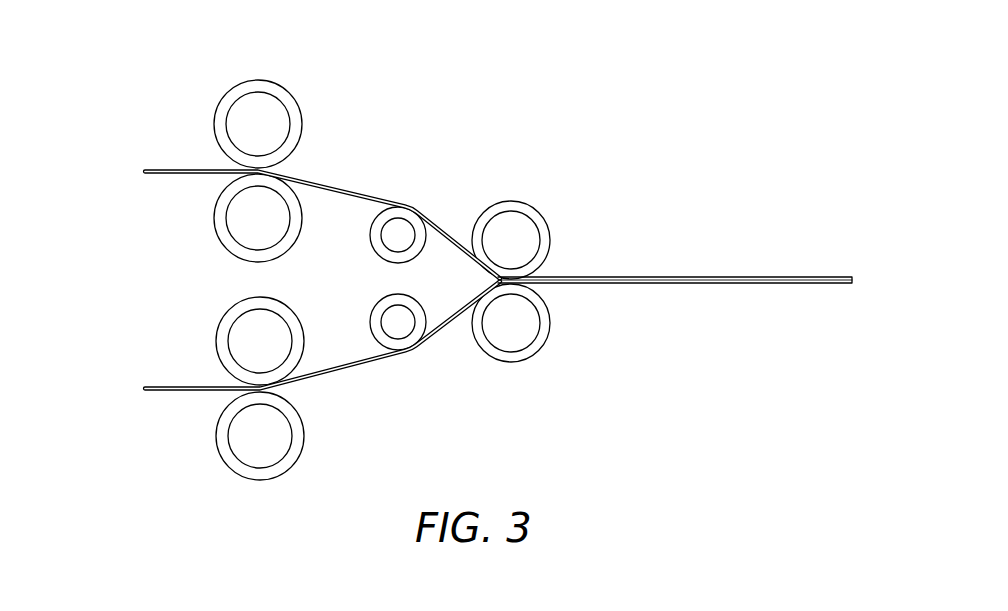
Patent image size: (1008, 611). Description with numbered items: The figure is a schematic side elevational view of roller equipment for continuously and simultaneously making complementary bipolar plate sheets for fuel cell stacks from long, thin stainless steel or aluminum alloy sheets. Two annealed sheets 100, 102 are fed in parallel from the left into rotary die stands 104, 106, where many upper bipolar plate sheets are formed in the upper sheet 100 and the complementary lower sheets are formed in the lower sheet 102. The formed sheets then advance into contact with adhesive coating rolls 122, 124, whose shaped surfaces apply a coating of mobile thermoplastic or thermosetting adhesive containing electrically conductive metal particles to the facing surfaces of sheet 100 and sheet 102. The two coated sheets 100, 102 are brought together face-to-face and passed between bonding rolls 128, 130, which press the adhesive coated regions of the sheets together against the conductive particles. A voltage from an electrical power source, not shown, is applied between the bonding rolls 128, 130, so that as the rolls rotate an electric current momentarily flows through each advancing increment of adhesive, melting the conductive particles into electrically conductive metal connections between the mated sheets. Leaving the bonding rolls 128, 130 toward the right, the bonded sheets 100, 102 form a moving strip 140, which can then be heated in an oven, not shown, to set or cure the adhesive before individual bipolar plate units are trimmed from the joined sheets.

The annealed sheet 100 is at (137, 110).
The annealed sheet 102 is at (130, 432).
The rotary die stand 104 is at (365, 52).
The rotary die stand 106 is at (375, 473).
The adhesive coating roll 122 is at (379, 256).
The adhesive coating roll 124 is at (379, 304).
The bonding roll 128 is at (509, 201).
The bonding roll 130 is at (509, 361).
The moving strip 140 is at (798, 218).